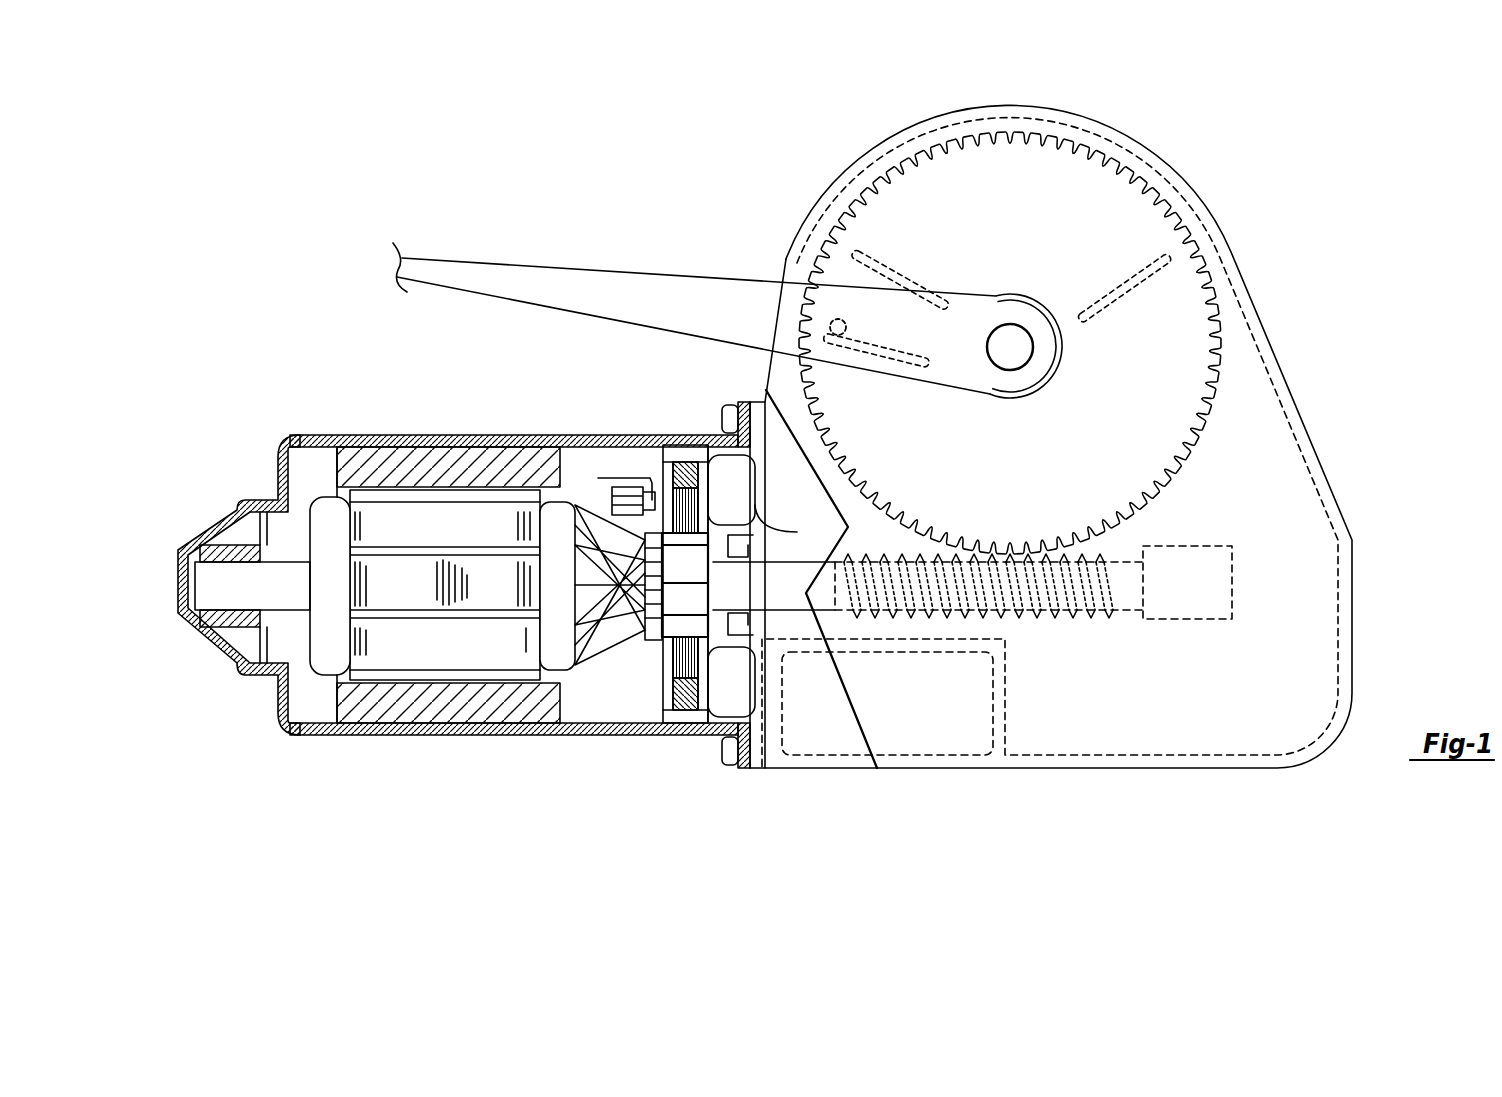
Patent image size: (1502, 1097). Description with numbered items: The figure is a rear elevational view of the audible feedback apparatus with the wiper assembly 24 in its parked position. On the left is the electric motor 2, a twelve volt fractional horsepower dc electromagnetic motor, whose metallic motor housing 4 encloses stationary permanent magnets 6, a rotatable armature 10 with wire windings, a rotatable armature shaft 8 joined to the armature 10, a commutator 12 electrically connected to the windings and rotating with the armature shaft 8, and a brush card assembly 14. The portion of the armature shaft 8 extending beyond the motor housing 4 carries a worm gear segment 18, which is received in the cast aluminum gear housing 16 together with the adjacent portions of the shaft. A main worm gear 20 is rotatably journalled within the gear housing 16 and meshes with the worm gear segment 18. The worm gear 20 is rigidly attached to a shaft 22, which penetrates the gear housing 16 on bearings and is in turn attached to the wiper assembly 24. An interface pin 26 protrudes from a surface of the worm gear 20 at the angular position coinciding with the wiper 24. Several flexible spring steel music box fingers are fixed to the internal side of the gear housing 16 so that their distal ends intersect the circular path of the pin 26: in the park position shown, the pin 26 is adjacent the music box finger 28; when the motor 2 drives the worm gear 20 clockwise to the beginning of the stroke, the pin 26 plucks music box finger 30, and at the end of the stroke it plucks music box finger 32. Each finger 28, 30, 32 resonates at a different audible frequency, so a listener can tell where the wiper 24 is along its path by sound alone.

The electric motor 2 is at (464, 595).
The motor housing 4 is at (500, 437).
The permanent magnets 6 is at (397, 703).
The armature shaft 8 is at (760, 600).
The armature 10 is at (373, 637).
The commutator 12 is at (680, 600).
The brush card assembly 14 is at (685, 660).
The gear housing 16 is at (953, 768).
The worm gear segment 18 is at (1060, 600).
The worm gear 20 is at (1190, 354).
The shaft 22 is at (1013, 327).
The wiper assembly 24 is at (655, 287).
The interface pin 26 is at (836, 322).
The music box finger 28 is at (863, 340).
The music box finger 30 is at (900, 273).
The music box finger 32 is at (1143, 273).